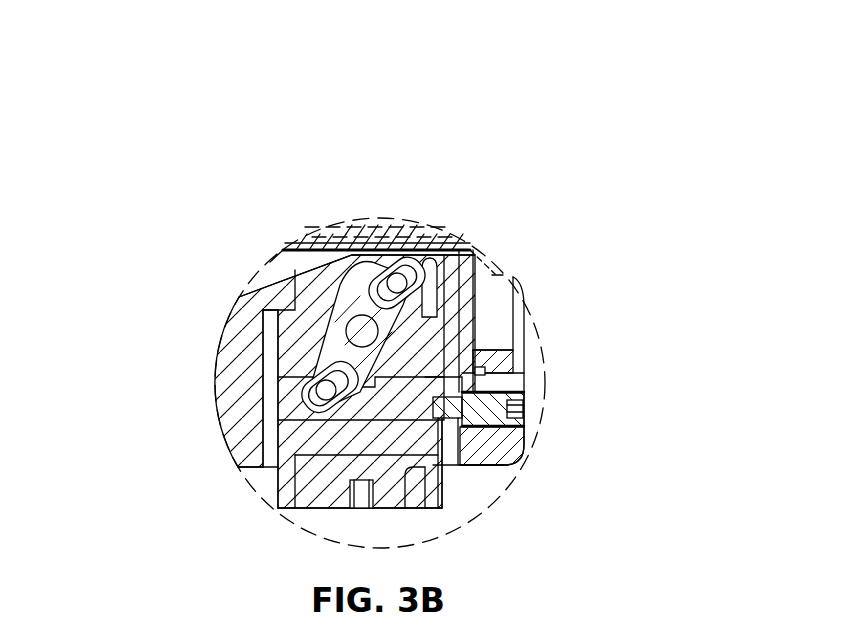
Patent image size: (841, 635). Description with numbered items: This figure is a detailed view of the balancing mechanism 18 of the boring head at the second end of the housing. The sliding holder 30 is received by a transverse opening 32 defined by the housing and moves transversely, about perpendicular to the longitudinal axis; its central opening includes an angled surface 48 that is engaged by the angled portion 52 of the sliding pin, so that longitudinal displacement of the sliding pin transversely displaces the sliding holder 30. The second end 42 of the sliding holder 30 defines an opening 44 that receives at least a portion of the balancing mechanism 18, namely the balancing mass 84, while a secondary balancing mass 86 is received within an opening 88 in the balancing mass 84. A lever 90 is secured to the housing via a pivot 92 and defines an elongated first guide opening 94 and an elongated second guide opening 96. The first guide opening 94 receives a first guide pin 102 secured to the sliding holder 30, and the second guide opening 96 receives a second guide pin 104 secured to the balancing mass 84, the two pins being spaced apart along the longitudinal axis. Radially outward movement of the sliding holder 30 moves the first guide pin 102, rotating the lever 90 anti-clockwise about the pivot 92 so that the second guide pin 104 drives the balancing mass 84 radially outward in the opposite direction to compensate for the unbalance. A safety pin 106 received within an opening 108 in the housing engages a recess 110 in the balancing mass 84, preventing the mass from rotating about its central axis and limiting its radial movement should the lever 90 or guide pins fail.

The balancing mechanism 18 is at (240, 482).
The sliding holder 30 is at (460, 282).
The transverse opening 32 is at (240, 465).
The second end 42 is at (258, 302).
The opening 44 is at (290, 288).
The angled surface 48 is at (287, 327).
The angled portion 52 is at (283, 250).
The balancing mass 84 is at (285, 487).
The secondary balancing mass 86 is at (317, 493).
The opening 88 is at (450, 445).
The lever 90 is at (362, 315).
The pivot 92 is at (333, 302).
The first guide opening 94 is at (387, 272).
The second guide opening 96 is at (310, 363).
The first guide pin 102 is at (440, 317).
The second guide pin 104 is at (400, 387).
The safety pin 106 is at (497, 370).
The opening 108 is at (524, 430).
The recess 110 is at (513, 425).